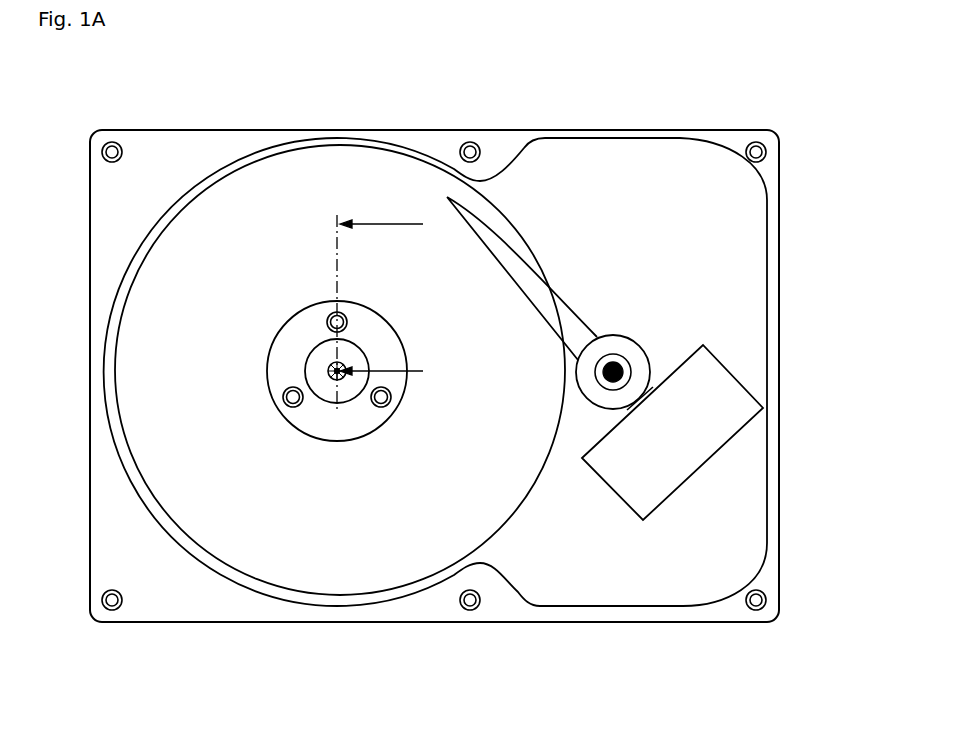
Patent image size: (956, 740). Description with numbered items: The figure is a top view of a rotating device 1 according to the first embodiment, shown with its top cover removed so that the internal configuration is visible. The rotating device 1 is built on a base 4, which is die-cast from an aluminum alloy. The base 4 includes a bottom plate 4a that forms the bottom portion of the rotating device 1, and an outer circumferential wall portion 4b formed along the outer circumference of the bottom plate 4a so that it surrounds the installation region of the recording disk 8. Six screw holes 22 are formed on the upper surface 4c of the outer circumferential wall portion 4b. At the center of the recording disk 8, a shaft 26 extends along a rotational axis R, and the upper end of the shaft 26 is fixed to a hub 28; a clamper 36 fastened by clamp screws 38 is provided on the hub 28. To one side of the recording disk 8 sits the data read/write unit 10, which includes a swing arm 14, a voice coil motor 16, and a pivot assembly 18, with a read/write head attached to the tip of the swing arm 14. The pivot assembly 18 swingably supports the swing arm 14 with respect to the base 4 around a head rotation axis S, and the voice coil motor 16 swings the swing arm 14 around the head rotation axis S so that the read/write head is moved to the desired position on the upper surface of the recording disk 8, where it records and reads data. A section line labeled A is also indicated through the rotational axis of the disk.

The rotating device 1 is at (425, 719).
The base 4 is at (781, 268).
The bottom plate 4a is at (567, 172).
The outer circumferential wall portion 4b is at (187, 153).
The upper surface 4c is at (92, 199).
The recording disk 8 is at (338, 188).
The data read/write unit 10 is at (659, 358).
The swing arm 14 is at (578, 314).
The voice coil motor 16 is at (704, 432).
The pivot assembly 18 is at (637, 357).
The screw holes 22 is at (112, 142).
The shaft 26 is at (300, 280).
The hub 28 is at (322, 357).
The clamper 36 is at (292, 373).
The clamp screws 38 is at (328, 316).
The rotational axis R is at (335, 371).
The head rotation axis S is at (620, 380).
The section line A- A is at (391, 312).